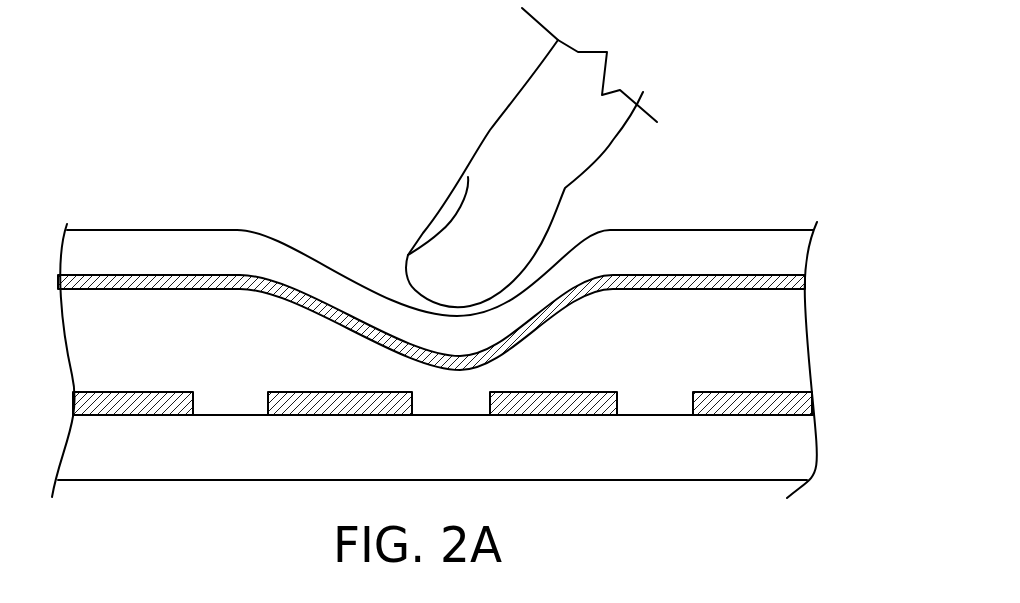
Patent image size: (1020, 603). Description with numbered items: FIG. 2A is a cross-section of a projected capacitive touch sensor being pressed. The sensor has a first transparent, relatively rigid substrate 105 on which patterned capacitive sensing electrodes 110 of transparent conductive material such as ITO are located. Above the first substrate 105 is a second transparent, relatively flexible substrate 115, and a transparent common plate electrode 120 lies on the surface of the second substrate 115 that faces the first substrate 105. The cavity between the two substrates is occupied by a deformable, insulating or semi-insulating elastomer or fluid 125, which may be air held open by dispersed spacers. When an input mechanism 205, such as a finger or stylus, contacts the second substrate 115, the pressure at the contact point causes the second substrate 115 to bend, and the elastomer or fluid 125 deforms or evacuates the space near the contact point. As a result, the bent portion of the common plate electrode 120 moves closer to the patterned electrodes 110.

The first transparent substrate 105 is at (807, 450).
The patterned capacitive sensing electrodes 110 is at (137, 390).
The second transparent substrate 115 is at (740, 230).
The common plate electrode 120 is at (647, 289).
The elastomer or fluid 125 is at (128, 331).
The input mechanism 205 is at (593, 123).